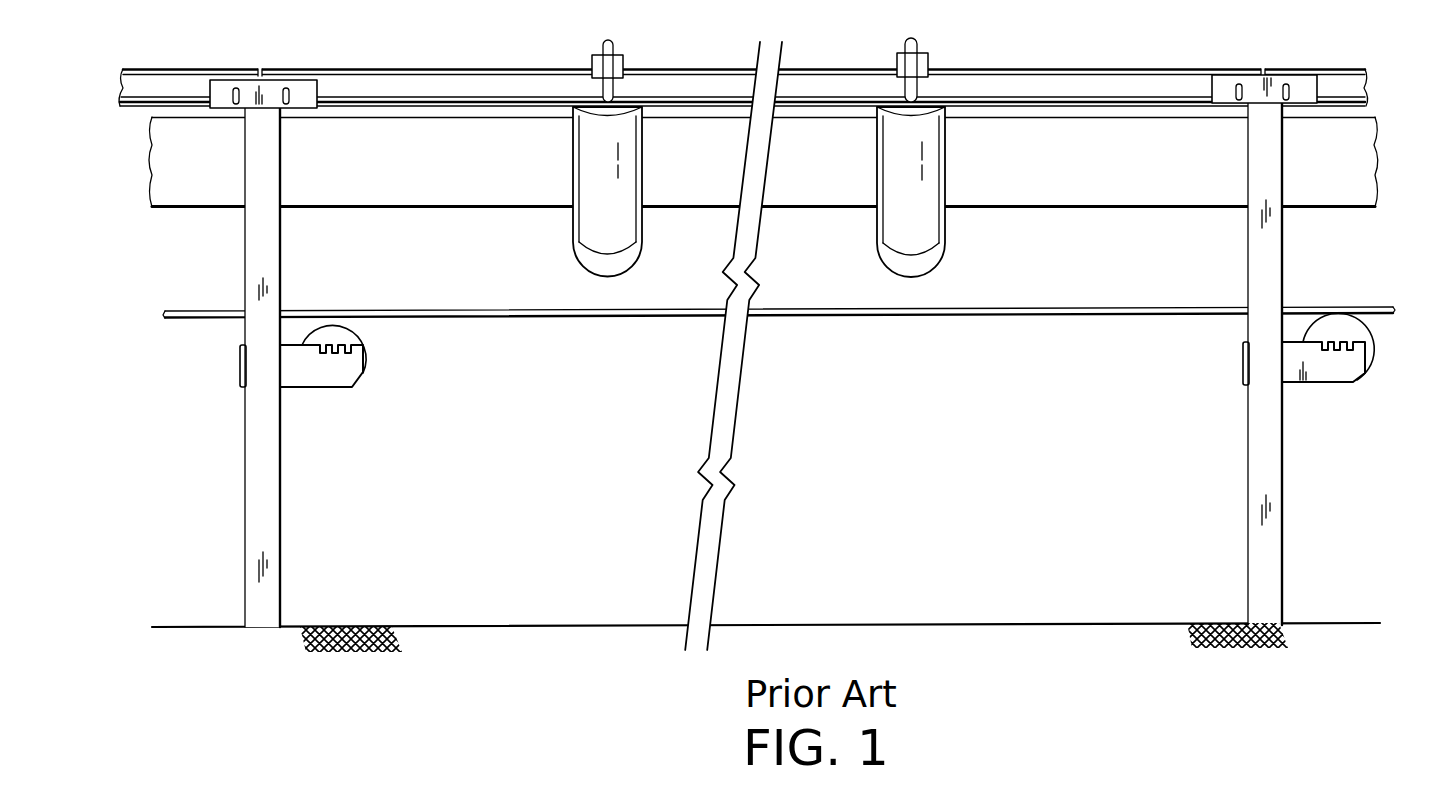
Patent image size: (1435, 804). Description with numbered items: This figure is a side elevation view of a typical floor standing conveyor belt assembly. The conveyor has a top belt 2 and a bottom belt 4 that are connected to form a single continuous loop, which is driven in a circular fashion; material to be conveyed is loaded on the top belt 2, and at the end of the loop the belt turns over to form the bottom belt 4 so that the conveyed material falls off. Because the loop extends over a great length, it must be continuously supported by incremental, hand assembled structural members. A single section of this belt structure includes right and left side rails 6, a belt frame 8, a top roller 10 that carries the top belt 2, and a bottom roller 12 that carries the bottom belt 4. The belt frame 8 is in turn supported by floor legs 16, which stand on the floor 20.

The top belt 2 is at (1377, 149).
The bottom belt 4 is at (1105, 308).
The side rail 6 is at (216, 69).
The belt frame 8 is at (245, 251).
The top roller 10 is at (643, 250).
The bottom roller 12 is at (373, 352).
The floor leg 16 is at (282, 536).
The floor 20 is at (512, 627).